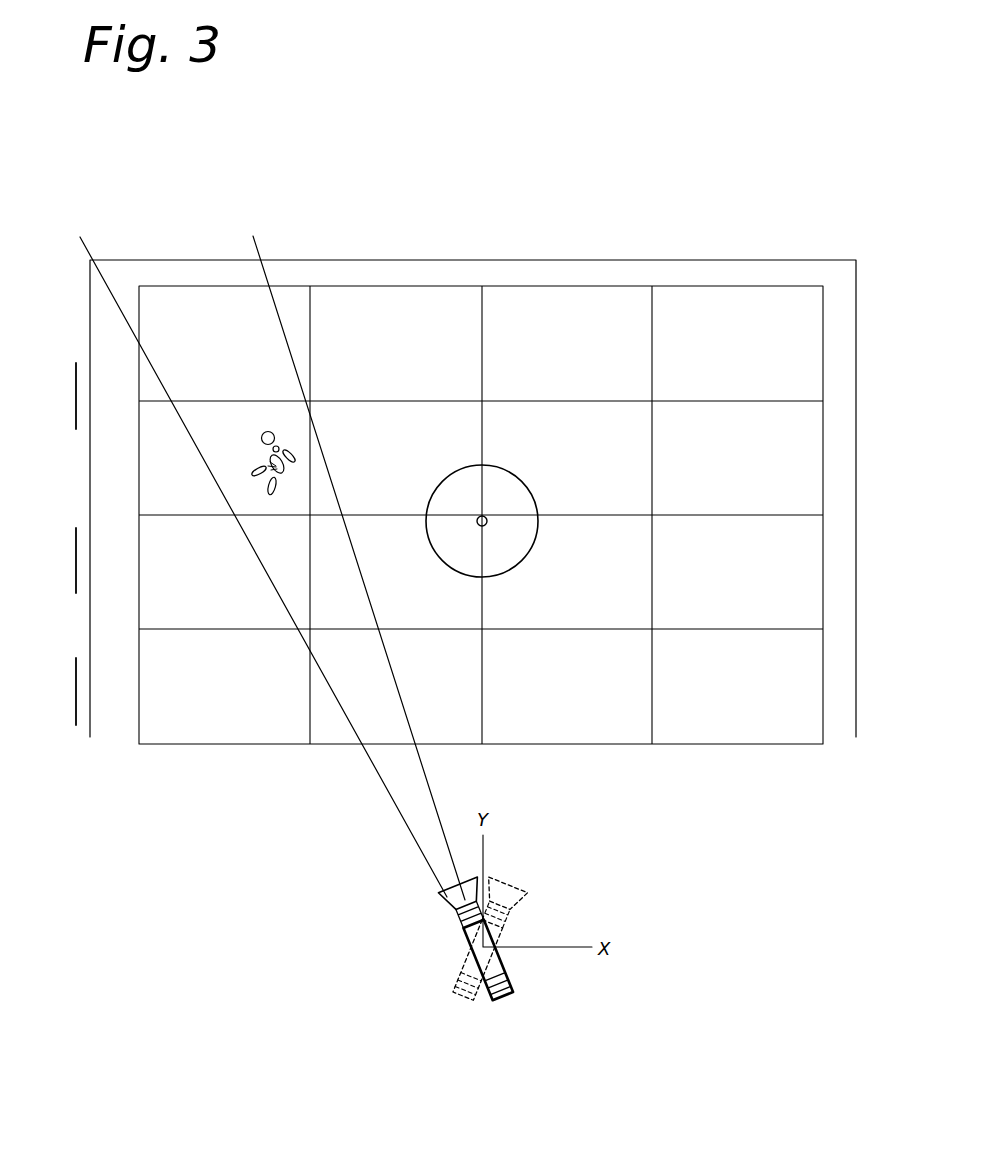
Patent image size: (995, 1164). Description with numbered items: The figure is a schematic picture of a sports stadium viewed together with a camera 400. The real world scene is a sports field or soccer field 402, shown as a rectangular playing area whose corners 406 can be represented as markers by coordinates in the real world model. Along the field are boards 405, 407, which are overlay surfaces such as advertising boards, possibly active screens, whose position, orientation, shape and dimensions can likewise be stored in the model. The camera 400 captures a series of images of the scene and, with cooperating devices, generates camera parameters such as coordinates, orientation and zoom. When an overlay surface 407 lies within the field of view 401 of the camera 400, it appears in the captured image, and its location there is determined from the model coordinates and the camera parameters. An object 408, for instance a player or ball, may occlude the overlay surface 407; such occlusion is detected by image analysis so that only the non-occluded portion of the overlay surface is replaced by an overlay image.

The camera 400 is at (462, 928).
The field of view 401 is at (426, 768).
The sports field 402 is at (138, 694).
The board 405 is at (76, 573).
The corners 406 is at (139, 286).
The board 407 is at (488, 521).
The object 408 is at (278, 470).